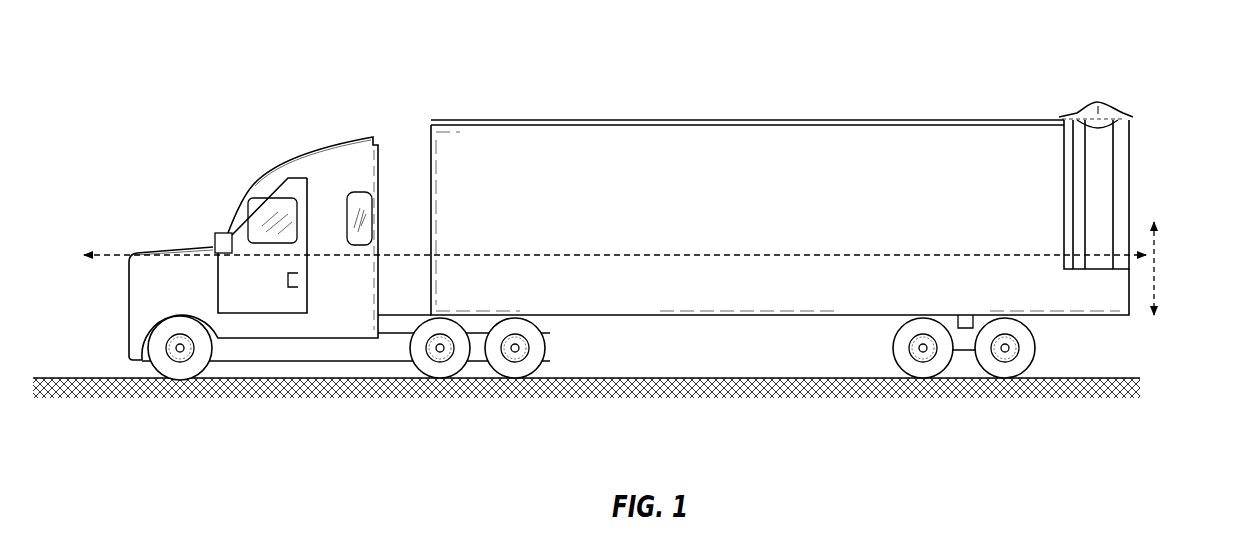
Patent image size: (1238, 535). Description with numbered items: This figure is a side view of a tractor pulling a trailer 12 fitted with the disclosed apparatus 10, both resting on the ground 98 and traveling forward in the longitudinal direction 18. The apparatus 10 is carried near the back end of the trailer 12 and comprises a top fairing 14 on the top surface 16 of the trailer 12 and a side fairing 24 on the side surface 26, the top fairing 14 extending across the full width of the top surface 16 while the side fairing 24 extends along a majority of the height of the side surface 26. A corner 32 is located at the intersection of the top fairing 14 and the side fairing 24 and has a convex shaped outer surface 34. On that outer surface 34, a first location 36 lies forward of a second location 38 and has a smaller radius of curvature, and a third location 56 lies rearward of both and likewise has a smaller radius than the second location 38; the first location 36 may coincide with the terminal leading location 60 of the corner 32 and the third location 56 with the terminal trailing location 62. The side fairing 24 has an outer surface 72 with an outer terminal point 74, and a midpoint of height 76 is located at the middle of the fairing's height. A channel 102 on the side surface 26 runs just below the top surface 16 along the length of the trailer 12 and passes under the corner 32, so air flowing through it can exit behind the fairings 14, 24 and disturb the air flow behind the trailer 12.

The apparatus 10 is at (1092, 171).
The trailer 12 is at (757, 225).
The top fairing 14 is at (1092, 86).
The top surface 16 is at (747, 99).
The longitudinal direction 18 is at (692, 255).
The side fairing 24 is at (1111, 203).
The side surface 26 is at (575, 158).
The corner 32 is at (1110, 105).
The outer surface 34 is at (1109, 102).
The first location 36 is at (1092, 86).
The second location 38 is at (1103, 78).
The third location 56 is at (1140, 86).
The terminal leading location 60 is at (1092, 86).
The terminal trailing location 62 is at (1140, 86).
The outer surface 72 is at (1083, 213).
The outer terminal point 74 is at (1112, 194).
The midpoint of height 76 is at (1112, 194).
The ground 98 is at (1065, 377).
The channel 102 is at (653, 125).